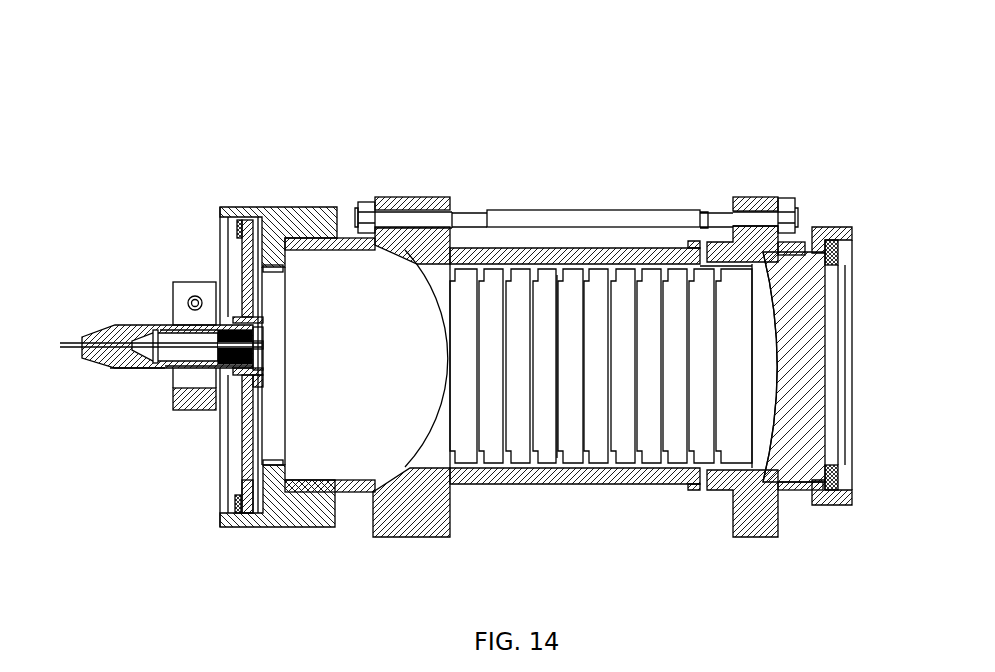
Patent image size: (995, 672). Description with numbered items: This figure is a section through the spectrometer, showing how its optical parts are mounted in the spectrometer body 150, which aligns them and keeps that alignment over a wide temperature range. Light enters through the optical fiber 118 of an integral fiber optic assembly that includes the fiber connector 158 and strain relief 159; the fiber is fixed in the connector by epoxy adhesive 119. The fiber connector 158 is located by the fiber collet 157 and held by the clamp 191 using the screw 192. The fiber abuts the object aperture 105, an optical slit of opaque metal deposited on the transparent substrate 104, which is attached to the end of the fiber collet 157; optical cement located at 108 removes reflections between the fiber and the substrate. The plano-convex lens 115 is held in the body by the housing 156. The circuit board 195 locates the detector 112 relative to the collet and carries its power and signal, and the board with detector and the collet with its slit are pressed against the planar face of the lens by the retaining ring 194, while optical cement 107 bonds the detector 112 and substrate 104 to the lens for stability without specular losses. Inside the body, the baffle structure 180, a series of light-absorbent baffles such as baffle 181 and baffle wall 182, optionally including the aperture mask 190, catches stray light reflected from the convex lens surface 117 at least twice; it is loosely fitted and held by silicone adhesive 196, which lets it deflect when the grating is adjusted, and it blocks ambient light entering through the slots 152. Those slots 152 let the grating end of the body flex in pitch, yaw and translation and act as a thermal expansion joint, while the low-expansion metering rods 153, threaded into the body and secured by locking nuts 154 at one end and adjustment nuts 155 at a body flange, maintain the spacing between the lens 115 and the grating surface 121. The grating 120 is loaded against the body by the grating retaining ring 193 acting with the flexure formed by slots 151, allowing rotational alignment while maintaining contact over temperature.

The substrate 104 is at (263, 365).
The object aperture 105 is at (262, 348).
The optical cement 107 is at (263, 335).
The optical cement location 108 is at (237, 228).
The detector 112 is at (260, 232).
The plano-convex lens 115 is at (357, 468).
The convex lens surface 117 is at (460, 484).
The optical fiber 118 is at (62, 348).
The epoxy adhesive 119 is at (220, 368).
The grating 120 is at (815, 277).
The grating surface 121 is at (767, 313).
The spectrometer body 150 is at (424, 198).
The slots (flexure) 151 is at (810, 483).
The slots 152 is at (698, 485).
The metering rods 153 is at (540, 210).
The locking nuts 154 is at (363, 202).
The adjustment nuts 155 is at (790, 200).
The housing 156 is at (230, 207).
The fiber collet 157 is at (163, 327).
The fiber connector 158 is at (150, 368).
The strain relief 159 is at (114, 370).
The baffle structure 180 is at (601, 433).
The baffle 181 is at (552, 463).
The baffle wall 182 is at (538, 463).
The aperture mask 190 is at (728, 250).
The clamp 191 is at (196, 296).
The screw 192 is at (197, 282).
The grating retaining ring 193 is at (832, 475).
The retaining ring 194 is at (236, 498).
The circuit board 195 is at (243, 487).
The silicone adhesive 196 is at (543, 440).